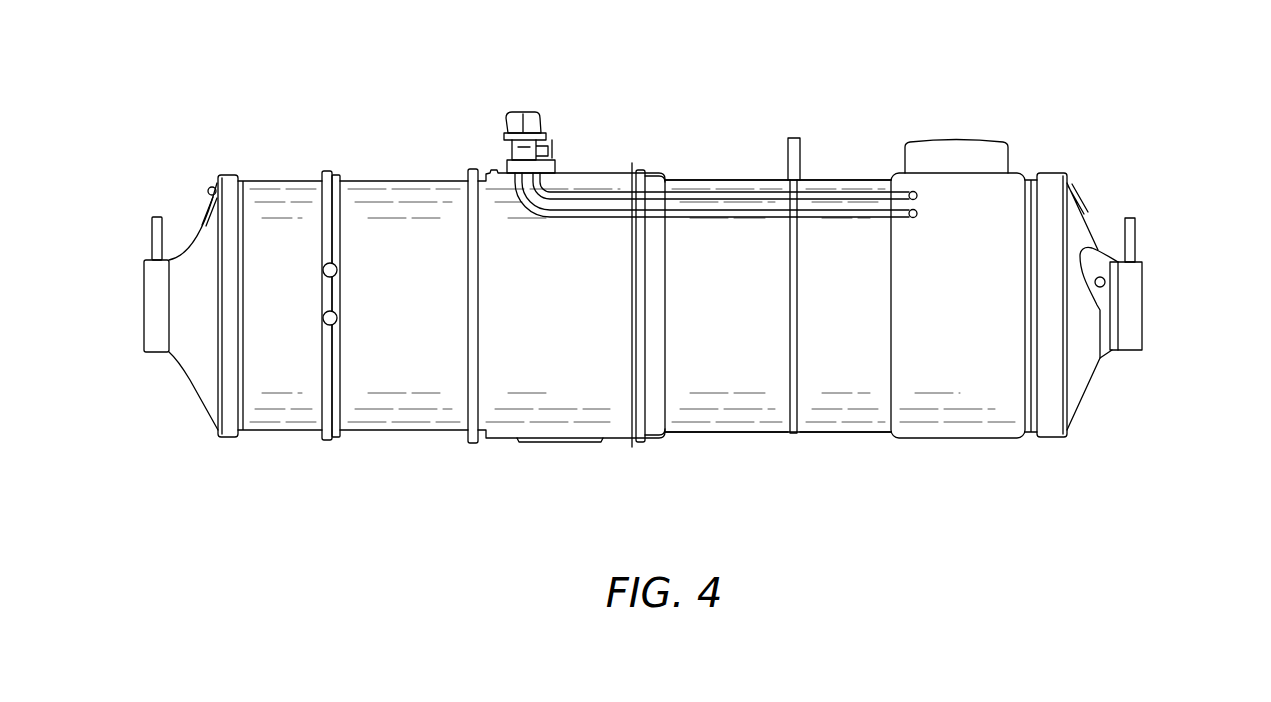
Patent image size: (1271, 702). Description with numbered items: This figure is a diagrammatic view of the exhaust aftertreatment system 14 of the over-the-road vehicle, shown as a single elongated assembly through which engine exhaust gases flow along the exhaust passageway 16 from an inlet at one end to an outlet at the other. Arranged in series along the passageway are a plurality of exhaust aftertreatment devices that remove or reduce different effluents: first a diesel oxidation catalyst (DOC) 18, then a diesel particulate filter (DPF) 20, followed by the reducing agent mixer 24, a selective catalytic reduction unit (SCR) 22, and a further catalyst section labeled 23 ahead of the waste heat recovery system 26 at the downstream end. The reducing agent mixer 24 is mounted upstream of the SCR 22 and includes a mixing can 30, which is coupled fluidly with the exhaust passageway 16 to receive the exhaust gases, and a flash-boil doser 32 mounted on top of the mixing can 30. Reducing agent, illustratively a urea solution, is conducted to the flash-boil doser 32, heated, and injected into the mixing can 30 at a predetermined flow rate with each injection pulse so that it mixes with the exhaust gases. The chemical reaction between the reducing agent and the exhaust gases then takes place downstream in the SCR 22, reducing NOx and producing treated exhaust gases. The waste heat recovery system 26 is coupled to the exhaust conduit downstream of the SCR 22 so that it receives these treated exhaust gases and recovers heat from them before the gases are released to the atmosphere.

The exhaust aftertreatment system 14 is at (1154, 94).
The exhaust passageway 16 is at (121, 308).
The diesel oxidation catalyst (DOC) 18 is at (275, 160).
The diesel particulate filter (DPF) 20 is at (377, 153).
The selective catalytic reduction unit (SCR) 22 is at (715, 145).
The ammonia slip catalyst (ASC) 23 is at (850, 147).
The reducing agent mixer 24 is at (494, 49).
The waste heat recovery system 26 is at (1017, 118).
The mixing can 30 is at (587, 162).
The flash-boil doser 32 is at (482, 109).